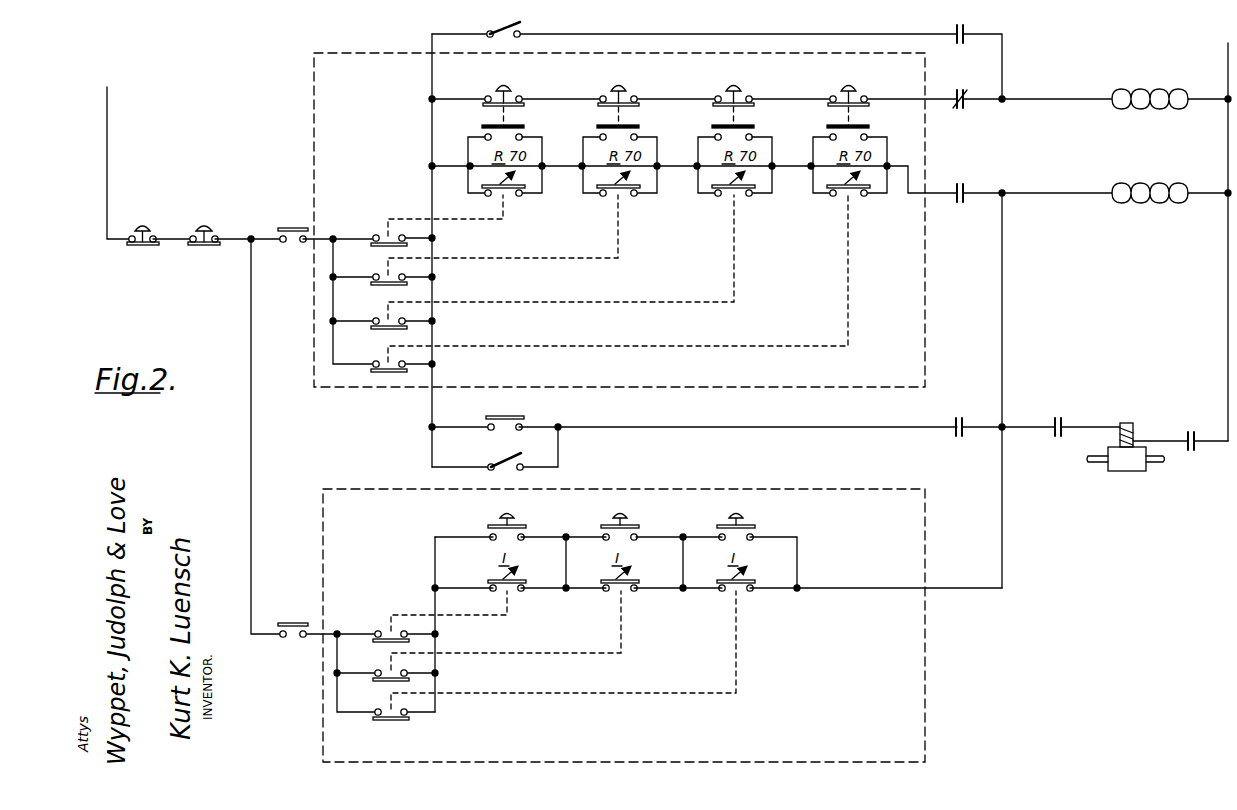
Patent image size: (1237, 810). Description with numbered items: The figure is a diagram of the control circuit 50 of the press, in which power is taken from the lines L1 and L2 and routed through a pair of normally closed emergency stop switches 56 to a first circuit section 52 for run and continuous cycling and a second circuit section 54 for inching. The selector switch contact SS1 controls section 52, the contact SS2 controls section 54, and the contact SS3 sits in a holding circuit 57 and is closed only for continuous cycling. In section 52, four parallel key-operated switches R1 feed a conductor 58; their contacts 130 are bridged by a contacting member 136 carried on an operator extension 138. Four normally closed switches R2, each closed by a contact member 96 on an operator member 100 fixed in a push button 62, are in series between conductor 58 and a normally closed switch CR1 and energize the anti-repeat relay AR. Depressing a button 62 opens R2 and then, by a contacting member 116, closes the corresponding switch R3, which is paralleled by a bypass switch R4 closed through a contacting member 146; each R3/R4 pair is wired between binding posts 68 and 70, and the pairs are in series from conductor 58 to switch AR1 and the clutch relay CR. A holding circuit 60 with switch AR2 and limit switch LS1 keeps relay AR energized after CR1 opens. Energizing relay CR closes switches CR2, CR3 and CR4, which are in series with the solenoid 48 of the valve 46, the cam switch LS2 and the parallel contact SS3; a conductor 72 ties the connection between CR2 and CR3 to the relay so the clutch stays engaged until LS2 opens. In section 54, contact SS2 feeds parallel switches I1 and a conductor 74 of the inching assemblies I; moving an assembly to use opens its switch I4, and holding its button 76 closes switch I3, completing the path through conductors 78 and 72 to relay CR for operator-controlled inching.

The line L1 is at (113, 153).
The line L2 is at (1215, 235).
The emergency stop switches 56 is at (150, 246).
The selector switch contact SS1 is at (296, 247).
The first circuit section 52 is at (388, 121).
The conductor 58 is at (432, 144).
The switches R1 is at (378, 236).
The bridging contacting member 136 is at (400, 246).
The contact 130 is at (400, 285).
The operator extension 138 is at (632, 362).
The push button 62 is at (496, 87).
The switches R2 is at (512, 101).
The switch operator member 100 is at (517, 112).
The movable circular contact member 96 is at (486, 102).
The movable circular contacting member 116 is at (482, 127).
The switches R3 is at (520, 134).
The binding post 68 is at (470, 163).
The binding post 70 is at (887, 165).
The switches R4 is at (486, 196).
The contacting member 146 is at (636, 196).
The position limit switch LS1 is at (505, 30).
The holding circuit 60 is at (722, 34).
The switch AR2 is at (970, 30).
The switch CR1 is at (960, 88).
The anti-repeat relay AR is at (1170, 90).
The switch AR1 is at (962, 184).
The clutch relay CR is at (1150, 190).
The conductor 72 is at (1005, 292).
The selector switch contact SS3 is at (496, 436).
The cam operated switch LS2 is at (522, 471).
The holding circuit 57 is at (706, 427).
The clutch relay switch CR2 is at (960, 437).
The clutch relay switch CR3 is at (1060, 437).
The solenoid 48 is at (1134, 428).
The clutch relay switch CR4 is at (1191, 428).
The solenoid operated valve 46 is at (1138, 471).
The conductor 78 is at (1005, 500).
The control circuit 50 is at (1008, 553).
The second circuit section 54 is at (380, 558).
The conductor 74 is at (435, 603).
The button 76 is at (613, 516).
The switch I3 is at (490, 535).
The inching button and switch assembly I is at (621, 553).
The switch I4 is at (510, 592).
The switches I1 is at (378, 632).
The selector switch contact SS2 is at (292, 642).